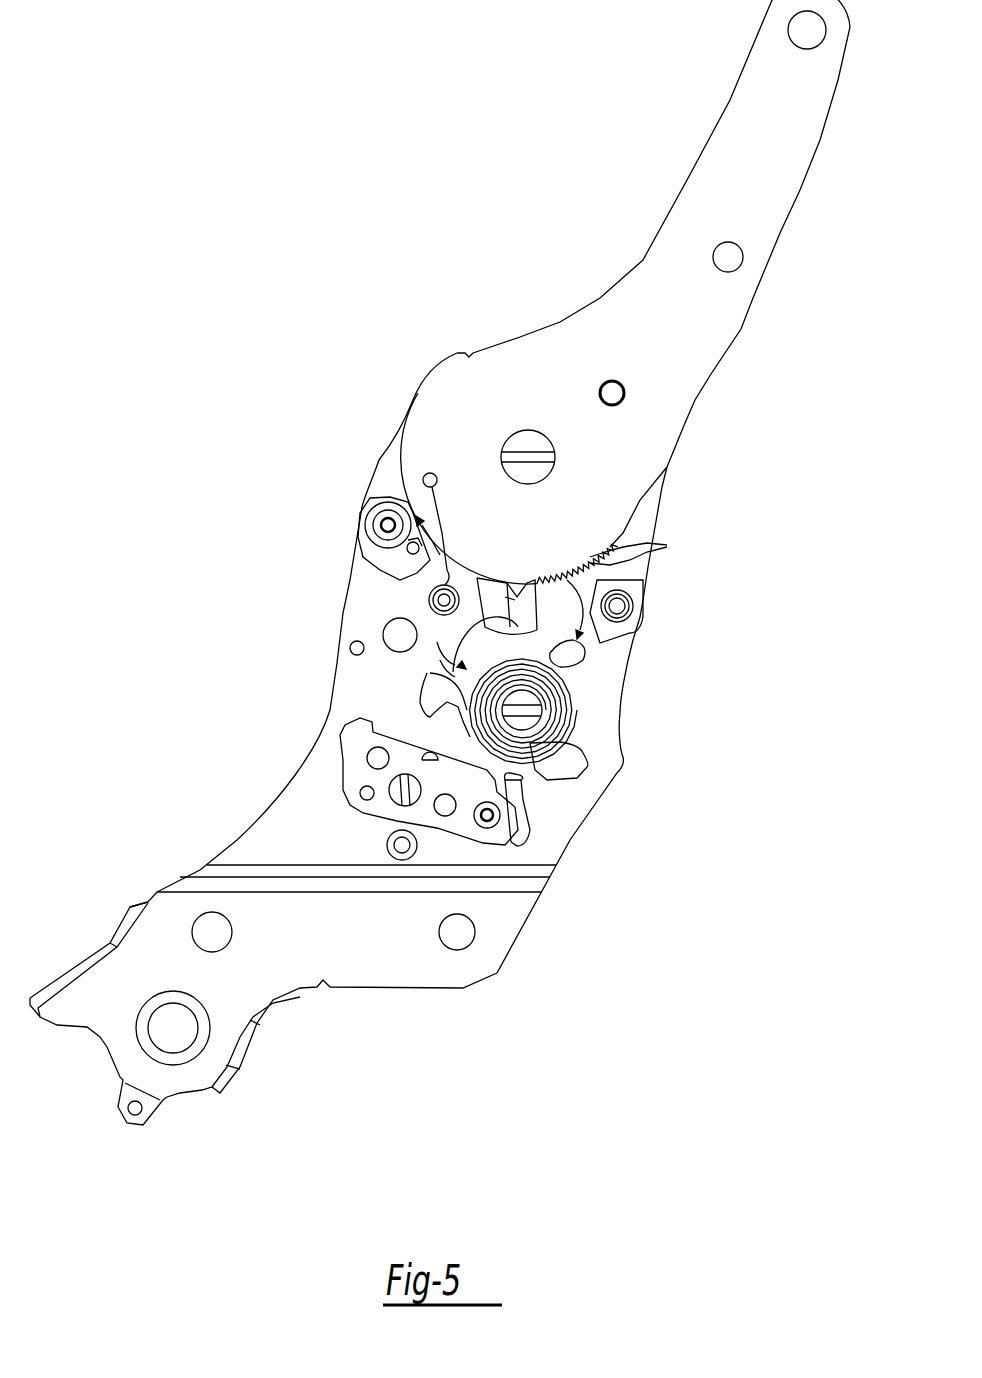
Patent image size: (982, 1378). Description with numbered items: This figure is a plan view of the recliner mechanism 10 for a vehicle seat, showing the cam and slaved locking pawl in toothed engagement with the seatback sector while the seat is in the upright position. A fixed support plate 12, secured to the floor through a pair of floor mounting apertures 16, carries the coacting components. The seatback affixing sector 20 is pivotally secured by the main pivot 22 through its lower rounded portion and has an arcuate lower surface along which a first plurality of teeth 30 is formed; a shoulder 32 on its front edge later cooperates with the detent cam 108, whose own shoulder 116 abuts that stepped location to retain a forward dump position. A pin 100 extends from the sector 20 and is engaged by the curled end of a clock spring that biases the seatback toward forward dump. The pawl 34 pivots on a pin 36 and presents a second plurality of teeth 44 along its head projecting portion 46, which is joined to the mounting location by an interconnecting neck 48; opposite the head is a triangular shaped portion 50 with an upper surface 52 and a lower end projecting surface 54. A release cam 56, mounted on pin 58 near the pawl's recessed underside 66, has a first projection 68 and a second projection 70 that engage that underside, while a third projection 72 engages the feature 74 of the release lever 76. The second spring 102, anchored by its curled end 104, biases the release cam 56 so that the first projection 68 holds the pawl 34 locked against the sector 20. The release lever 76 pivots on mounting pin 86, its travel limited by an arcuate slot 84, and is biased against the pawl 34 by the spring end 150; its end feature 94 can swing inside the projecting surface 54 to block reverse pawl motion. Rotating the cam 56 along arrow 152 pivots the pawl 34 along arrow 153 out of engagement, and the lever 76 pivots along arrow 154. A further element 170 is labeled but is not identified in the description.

The recliner mechanism 10 is at (358, 298).
The fixed support plate 12 is at (352, 664).
The floor mounting apertures 16 is at (212, 932).
The seatback affixing sector 20 is at (660, 273).
The main pivot 22 is at (523, 442).
The first plurality of teeth 30 is at (660, 545).
The shoulder defined location 32 is at (467, 353).
The pawl 34 is at (447, 570).
The pin 36 is at (430, 600).
The second plurality of teeth 44 is at (596, 557).
The head projecting portion 46 is at (590, 644).
The interconnecting neck 48 is at (517, 583).
The triangular shaped portion 50 is at (383, 635).
The upper surface 52 is at (398, 560).
The lower to end projecting surface 54 is at (375, 715).
The release cam 56 is at (471, 647).
The pin 58 is at (547, 700).
The recessed underside location 66 is at (547, 582).
The first projection 68 is at (575, 662).
The second projection 70 is at (479, 578).
The third projection 72 is at (587, 757).
The feature 74 is at (533, 782).
The release lever 76 is at (450, 830).
The arcuate slot 84 is at (392, 794).
The pivotal mounting pin 86 is at (500, 817).
The end defined feature 94 is at (372, 727).
The pin 100 is at (618, 393).
The second spring 102 is at (528, 703).
The curled end 104 is at (427, 674).
The detent cam 108 is at (360, 503).
The shoulder defined location 116 is at (430, 473).
The opposite extending end 150 is at (535, 818).
The arrow 152 is at (507, 580).
The arrow 153 is at (600, 582).
The directional arrow 154 is at (380, 735).
The pivot 170 is at (365, 525).